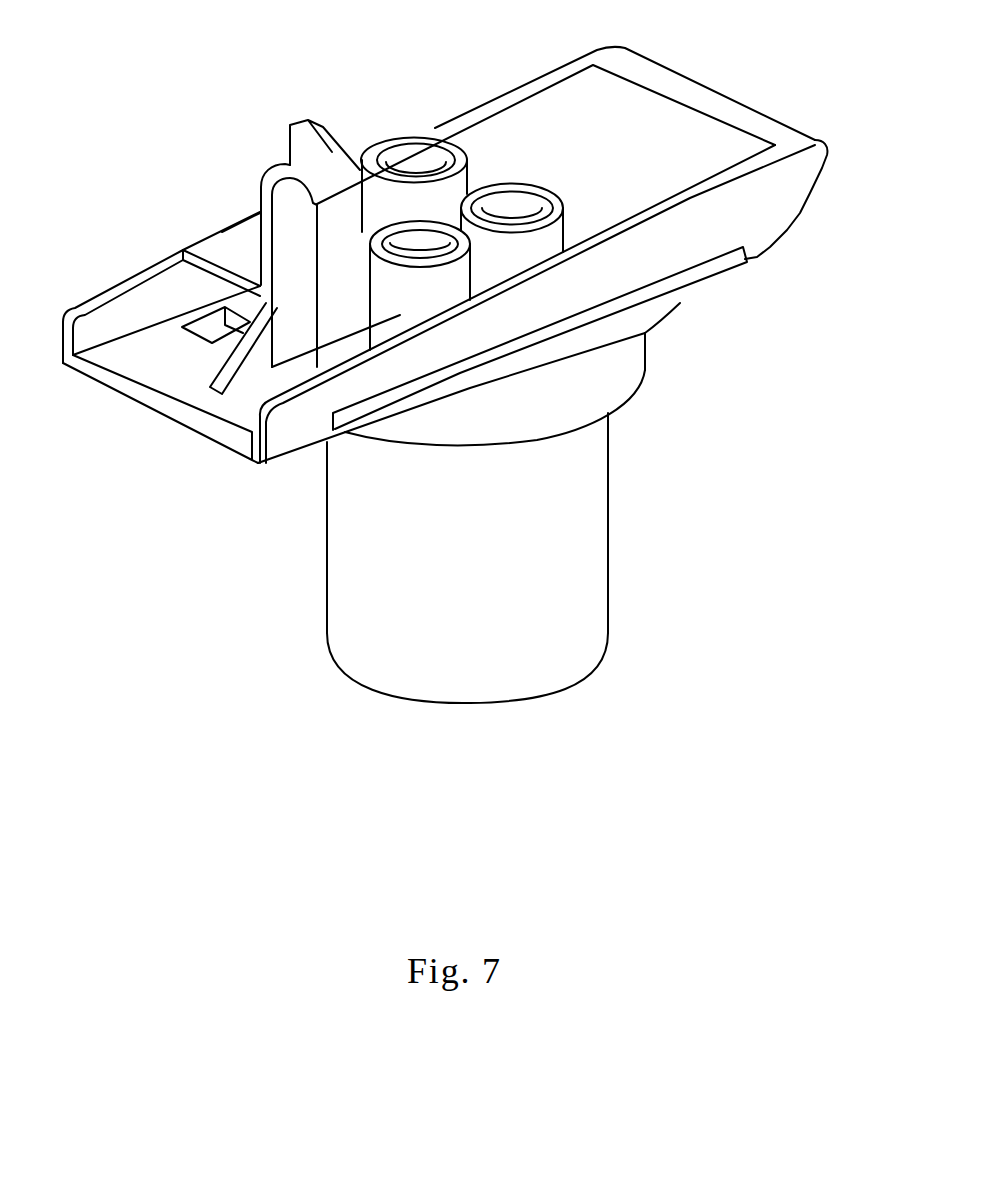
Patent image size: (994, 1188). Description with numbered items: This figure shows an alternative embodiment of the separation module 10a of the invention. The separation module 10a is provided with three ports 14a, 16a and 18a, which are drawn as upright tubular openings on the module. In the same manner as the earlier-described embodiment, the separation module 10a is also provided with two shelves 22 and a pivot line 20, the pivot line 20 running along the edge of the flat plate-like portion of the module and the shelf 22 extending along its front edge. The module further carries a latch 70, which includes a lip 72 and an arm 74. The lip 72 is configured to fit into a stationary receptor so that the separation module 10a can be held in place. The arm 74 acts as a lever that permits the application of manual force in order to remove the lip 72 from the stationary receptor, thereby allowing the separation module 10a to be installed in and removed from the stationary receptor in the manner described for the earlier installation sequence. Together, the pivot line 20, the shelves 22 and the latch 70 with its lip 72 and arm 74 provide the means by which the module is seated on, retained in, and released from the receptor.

The separation module 10a is at (552, 593).
The port 14a is at (515, 207).
The port 16a is at (420, 245).
The port 18a is at (413, 163).
The pivot line 20 is at (820, 137).
The shelf 22 is at (667, 307).
The latch 70 is at (288, 330).
The lip 72 is at (332, 175).
The arm 74 is at (228, 232).